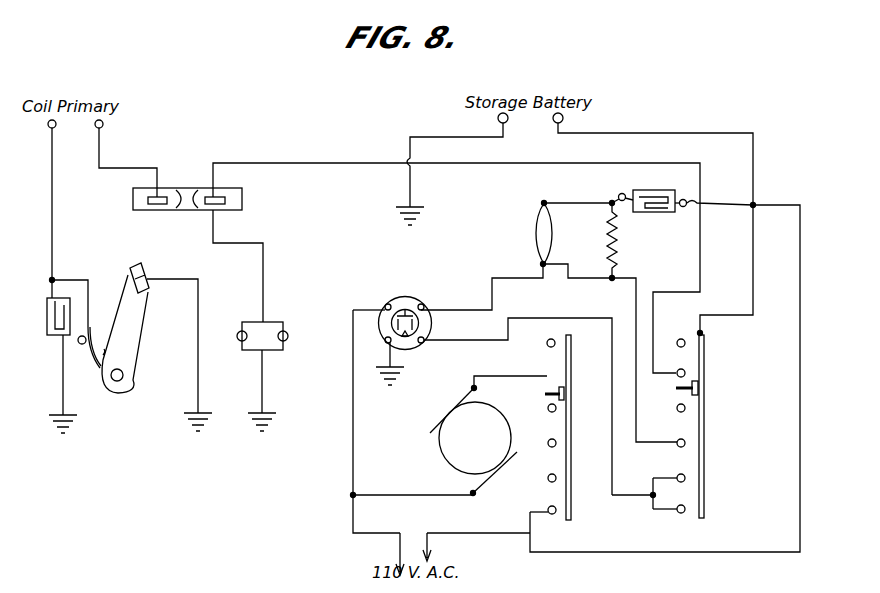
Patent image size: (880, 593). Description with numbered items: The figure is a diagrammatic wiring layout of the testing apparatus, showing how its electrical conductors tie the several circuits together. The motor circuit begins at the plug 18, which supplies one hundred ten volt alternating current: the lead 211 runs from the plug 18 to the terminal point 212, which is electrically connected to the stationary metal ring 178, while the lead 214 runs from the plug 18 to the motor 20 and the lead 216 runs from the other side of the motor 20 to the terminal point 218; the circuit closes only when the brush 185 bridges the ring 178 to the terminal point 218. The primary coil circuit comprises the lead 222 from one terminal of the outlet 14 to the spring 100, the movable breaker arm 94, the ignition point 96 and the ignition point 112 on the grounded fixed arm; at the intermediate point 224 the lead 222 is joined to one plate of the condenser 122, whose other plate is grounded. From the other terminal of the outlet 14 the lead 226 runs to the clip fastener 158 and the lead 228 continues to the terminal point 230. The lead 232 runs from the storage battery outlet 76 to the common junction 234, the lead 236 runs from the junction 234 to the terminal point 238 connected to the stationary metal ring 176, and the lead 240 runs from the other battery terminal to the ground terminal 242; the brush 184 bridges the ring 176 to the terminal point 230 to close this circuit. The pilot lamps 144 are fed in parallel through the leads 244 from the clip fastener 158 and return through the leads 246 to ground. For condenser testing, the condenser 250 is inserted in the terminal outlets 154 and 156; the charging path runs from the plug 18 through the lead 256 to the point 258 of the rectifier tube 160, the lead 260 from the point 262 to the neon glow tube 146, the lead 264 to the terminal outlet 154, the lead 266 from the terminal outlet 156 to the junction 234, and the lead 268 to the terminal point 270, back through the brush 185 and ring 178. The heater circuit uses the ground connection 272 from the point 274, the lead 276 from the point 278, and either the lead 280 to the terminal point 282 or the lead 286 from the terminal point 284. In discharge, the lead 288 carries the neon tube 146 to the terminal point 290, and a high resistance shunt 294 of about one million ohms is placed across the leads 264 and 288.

The outlet 14 is at (55, 126).
The lead 222 is at (60, 198).
The lead 226 is at (143, 167).
The intermediate point 224 is at (52, 279).
The condenser 122 is at (47, 328).
The spring 100 is at (96, 372).
The movable breaker arm 94 is at (120, 333).
The ignition point 96 is at (132, 271).
The ignition point 112 is at (147, 270).
The clip fastener 158 is at (182, 210).
The lead 228 is at (298, 165).
The leads 244 is at (266, 257).
The pilot lamps 144 is at (286, 332).
The leads 246 is at (283, 382).
The storage battery 76 is at (508, 121).
The lead 240 is at (420, 128).
The ground terminal 242 is at (395, 209).
The lead 232 is at (705, 122).
The lead 236 is at (754, 258).
The common junction 234 is at (756, 204).
The lead 268 is at (800, 288).
The neon glow tube 146 is at (536, 226).
The lead 264 is at (563, 200).
The condenser terminal outlet 154 is at (618, 194).
The condenser 250 is at (647, 190).
The condenser terminal outlet 156 is at (682, 208).
The lead 266 is at (722, 205).
The high resistance shunt 294 is at (608, 232).
The lead 260 is at (518, 278).
The lead 288 is at (632, 280).
The rectifier tube 160 is at (404, 296).
The point 258 is at (383, 306).
The point 262 is at (424, 307).
The point 274 is at (385, 341).
The point 278 is at (424, 343).
The ground connection 272 is at (406, 374).
The lead 276 is at (612, 440).
The lead 256 is at (352, 452).
The lead 214 is at (383, 497).
The plug 18 is at (425, 542).
The terminal point 212 is at (543, 540).
The motor 20 is at (440, 450).
The lead 211 is at (476, 497).
The lead 216 is at (498, 364).
The terminal point 218 is at (546, 343).
The brush 185 is at (546, 394).
The stationary metal ring 178 is at (582, 348).
The terminal point 270 is at (548, 507).
The terminal point 238 is at (698, 333).
The terminal point 230 is at (677, 372).
The stationary metal ring 176 is at (703, 367).
The brush 184 is at (706, 408).
The terminal point 290 is at (677, 442).
The terminal point 284 is at (678, 476).
The terminal point 282 is at (681, 514).
The lead 286 is at (651, 495).
The lead 280 is at (652, 508).